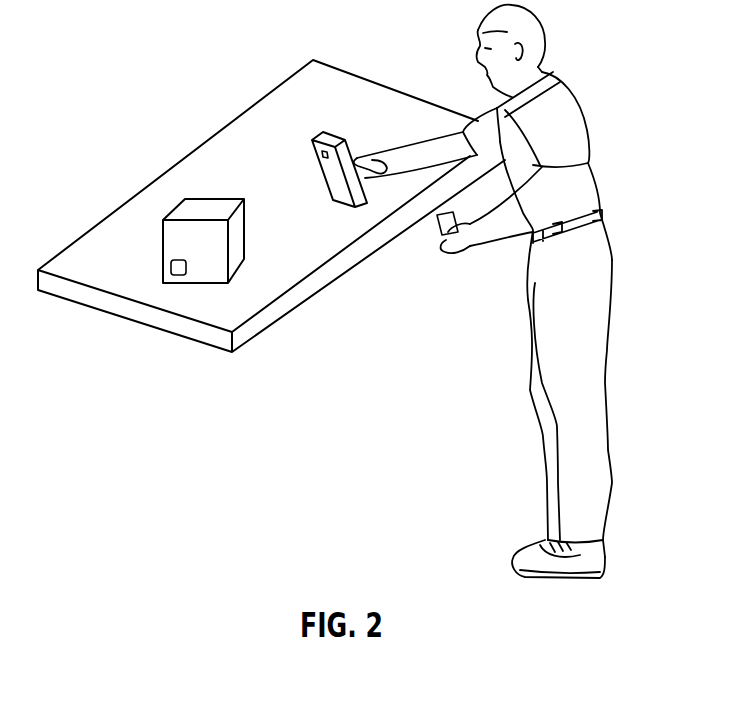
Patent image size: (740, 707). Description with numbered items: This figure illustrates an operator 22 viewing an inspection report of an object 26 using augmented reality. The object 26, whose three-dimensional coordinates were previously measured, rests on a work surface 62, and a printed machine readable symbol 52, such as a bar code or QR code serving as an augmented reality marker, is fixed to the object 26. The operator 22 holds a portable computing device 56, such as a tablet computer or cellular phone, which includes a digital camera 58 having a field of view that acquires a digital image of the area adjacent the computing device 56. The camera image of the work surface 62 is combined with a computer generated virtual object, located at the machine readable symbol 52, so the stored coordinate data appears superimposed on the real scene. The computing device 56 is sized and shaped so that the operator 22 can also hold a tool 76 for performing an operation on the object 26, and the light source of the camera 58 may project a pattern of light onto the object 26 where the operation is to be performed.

The operator 22 is at (610, 415).
The object 26 is at (173, 207).
The machine readable symbol 52 is at (177, 276).
The portable computing device 56 is at (327, 158).
The digital camera 58 is at (318, 157).
The work surface 62 is at (77, 303).
The tool 76 is at (443, 238).